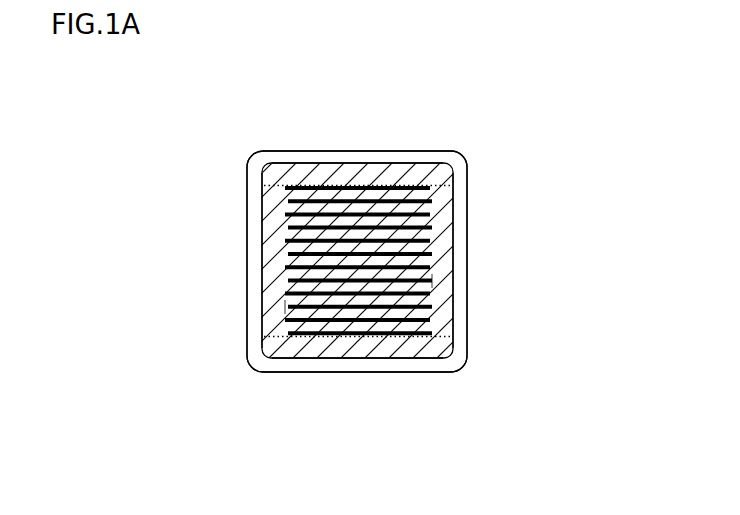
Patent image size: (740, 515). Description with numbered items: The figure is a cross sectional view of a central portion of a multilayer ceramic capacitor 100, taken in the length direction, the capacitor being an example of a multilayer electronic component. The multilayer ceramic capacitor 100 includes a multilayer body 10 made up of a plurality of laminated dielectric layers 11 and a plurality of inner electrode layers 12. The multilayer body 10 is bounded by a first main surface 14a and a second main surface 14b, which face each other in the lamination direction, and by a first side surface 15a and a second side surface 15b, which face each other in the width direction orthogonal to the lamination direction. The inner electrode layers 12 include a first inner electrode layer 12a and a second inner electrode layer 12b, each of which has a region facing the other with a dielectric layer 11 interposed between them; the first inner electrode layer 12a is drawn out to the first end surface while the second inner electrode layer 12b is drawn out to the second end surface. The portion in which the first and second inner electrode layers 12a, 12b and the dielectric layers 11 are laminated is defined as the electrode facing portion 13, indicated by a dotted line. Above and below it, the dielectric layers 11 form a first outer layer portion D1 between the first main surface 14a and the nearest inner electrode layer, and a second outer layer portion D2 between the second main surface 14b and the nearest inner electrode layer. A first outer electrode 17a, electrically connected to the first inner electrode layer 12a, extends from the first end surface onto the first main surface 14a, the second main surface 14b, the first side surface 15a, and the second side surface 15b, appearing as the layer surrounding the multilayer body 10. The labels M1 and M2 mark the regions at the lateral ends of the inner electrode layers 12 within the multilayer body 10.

The multilayer ceramic capacitor 100 is at (641, 84).
The multilayer body 10 is at (371, 158).
The dielectric layers 11 is at (392, 190).
The inner electrode layers 12 is at (334, 205).
The first inner electrode layer 12a is at (344, 189).
The second inner electrode layer 12b is at (291, 188).
The electrode facing portion 13 is at (454, 191).
The first main surface 14a is at (436, 158).
The second main surface 14b is at (437, 365).
The first side surface 15a is at (256, 256).
The second side surface 15b is at (459, 257).
The first outer electrode 17a is at (252, 177).
The first side margin portion M1 is at (282, 304).
The second side margin portion M2 is at (476, 285).
The first outer layer portion D1 is at (353, 178).
The second outer layer portion D2 is at (338, 350).